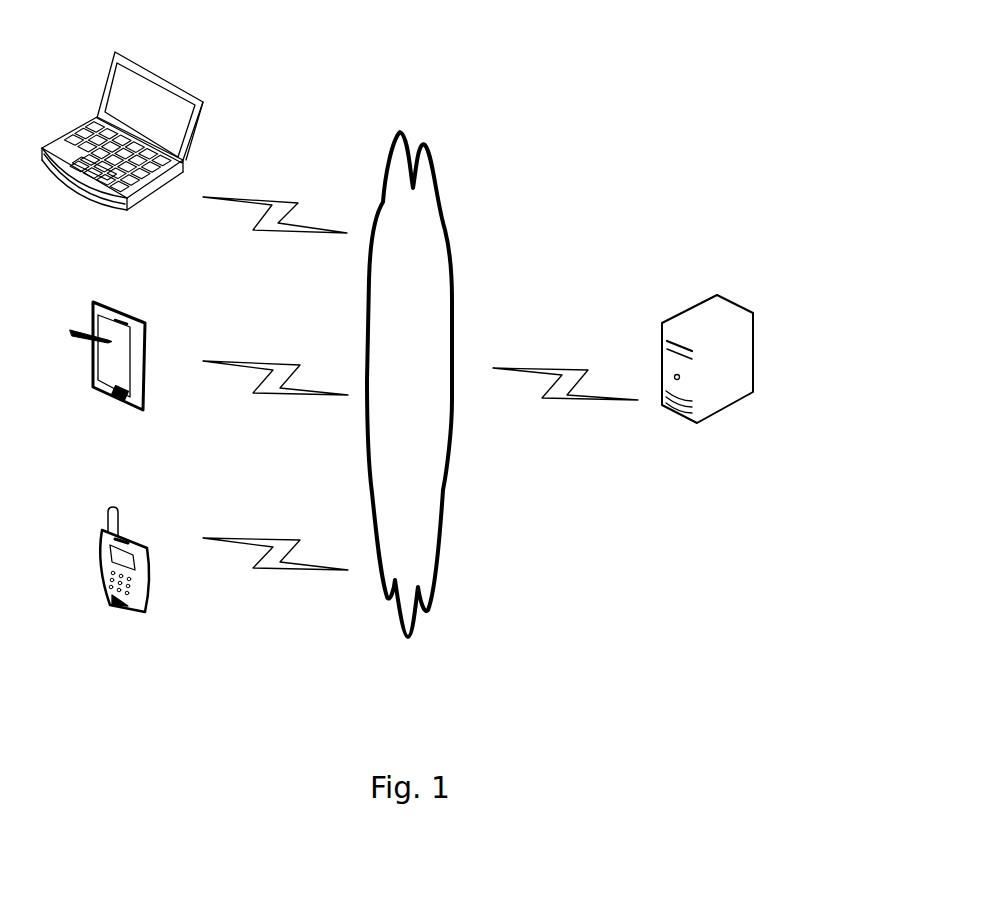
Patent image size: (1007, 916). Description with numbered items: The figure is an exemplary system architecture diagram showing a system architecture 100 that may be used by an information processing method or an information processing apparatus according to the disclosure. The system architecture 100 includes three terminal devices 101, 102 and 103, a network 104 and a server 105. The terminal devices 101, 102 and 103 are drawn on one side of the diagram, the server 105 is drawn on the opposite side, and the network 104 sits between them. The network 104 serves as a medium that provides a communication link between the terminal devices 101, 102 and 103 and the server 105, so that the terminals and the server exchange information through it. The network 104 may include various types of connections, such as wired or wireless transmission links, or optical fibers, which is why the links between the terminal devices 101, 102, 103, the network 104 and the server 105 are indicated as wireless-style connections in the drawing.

The system architecture 100 is at (622, 40).
The terminal device 101 is at (124, 582).
The terminal device 102 is at (107, 375).
The terminal device 103 is at (122, 150).
The network 104 is at (409, 384).
The server 105 is at (707, 381).